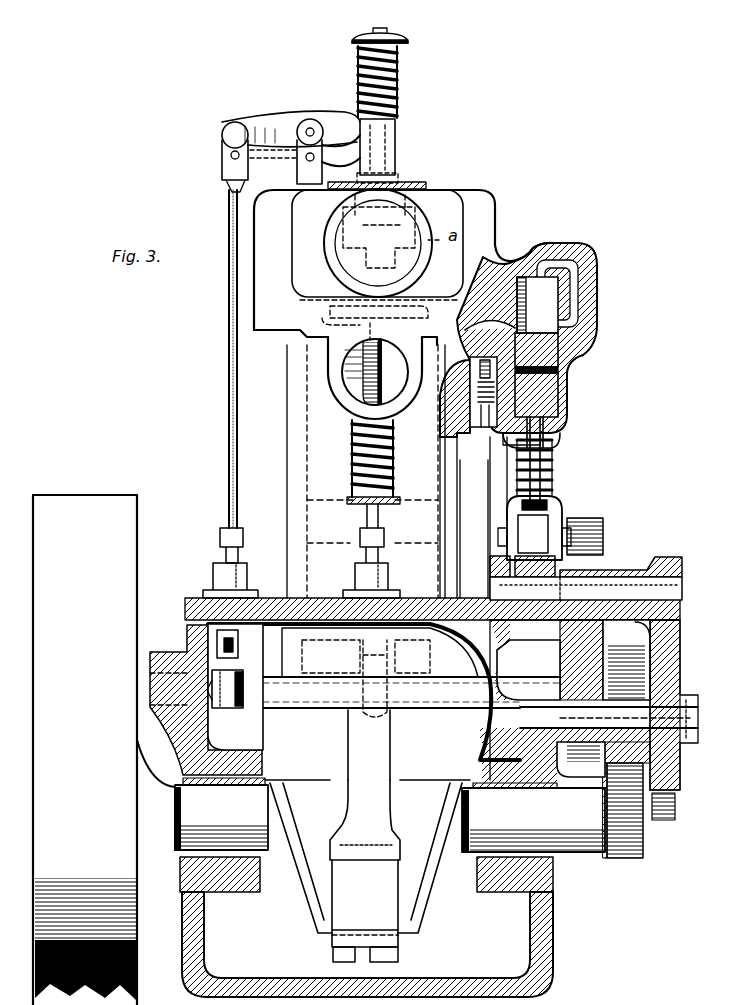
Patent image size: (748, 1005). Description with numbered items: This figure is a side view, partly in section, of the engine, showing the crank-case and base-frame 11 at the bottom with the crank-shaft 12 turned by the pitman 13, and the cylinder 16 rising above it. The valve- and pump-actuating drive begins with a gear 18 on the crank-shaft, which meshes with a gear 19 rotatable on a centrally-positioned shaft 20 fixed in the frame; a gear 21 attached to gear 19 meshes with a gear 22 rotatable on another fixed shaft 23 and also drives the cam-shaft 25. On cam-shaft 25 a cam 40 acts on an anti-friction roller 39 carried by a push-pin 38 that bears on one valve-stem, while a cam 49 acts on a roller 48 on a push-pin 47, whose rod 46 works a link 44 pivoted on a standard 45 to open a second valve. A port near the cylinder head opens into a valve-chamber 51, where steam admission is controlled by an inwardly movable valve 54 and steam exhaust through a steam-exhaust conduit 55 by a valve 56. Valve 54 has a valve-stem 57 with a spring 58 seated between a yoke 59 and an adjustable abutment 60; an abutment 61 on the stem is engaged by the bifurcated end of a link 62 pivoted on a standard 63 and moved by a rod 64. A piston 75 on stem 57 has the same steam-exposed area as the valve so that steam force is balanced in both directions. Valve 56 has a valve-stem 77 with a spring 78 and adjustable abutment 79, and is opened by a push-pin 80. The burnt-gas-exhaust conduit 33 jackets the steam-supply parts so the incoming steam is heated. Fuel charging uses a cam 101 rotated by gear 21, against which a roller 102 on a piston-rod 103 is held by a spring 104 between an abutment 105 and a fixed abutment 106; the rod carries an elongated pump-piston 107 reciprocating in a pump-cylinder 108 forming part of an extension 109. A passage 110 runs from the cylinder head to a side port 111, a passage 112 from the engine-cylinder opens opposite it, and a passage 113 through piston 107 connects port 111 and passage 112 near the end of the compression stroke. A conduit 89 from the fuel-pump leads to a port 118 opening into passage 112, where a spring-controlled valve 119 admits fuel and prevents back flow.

The crank-case and base-frame 11 is at (418, 988).
The crank-shaft 12 is at (390, 818).
The pitman 13 is at (366, 859).
The cylinder 16 is at (432, 482).
The gear 18 is at (643, 843).
The gear 19 is at (625, 648).
The shaft 20 is at (698, 718).
The gear 21 is at (585, 765).
The gear 22 is at (603, 530).
The shaft 23 is at (586, 578).
The cam-shaft 25 is at (315, 710).
The burnt-gas-exhaust conduit 33 is at (421, 250).
The push-pin 38 is at (396, 678).
The anti-friction roller 39 is at (331, 656).
The cam 40 is at (372, 720).
The link 44 is at (328, 116).
The standard 45 is at (307, 118).
The rod 46 is at (222, 135).
The push-pin 47 is at (213, 578).
The anti-friction roller 48 is at (238, 650).
The cam 49 is at (230, 712).
The valve-chamber 51 is at (428, 314).
The valve 54 is at (410, 300).
The steam-exhaust conduit 55 is at (395, 368).
The valve 56 is at (335, 318).
The valve-stem 57 is at (387, 28).
The spring 58 is at (398, 78).
The yoke 59 is at (395, 131).
The adjustable abutment 60 is at (408, 42).
The abutment 61 is at (398, 174).
The link 62 is at (341, 150).
The standard 63 is at (309, 162).
The rod 64 is at (238, 380).
The piston 75 is at (378, 243).
The valve-stem 77 is at (352, 336).
The spring 78 is at (394, 470).
The adjustable abutment 79 is at (388, 506).
The push-pin 80 is at (390, 580).
The conduit 89 is at (480, 500).
The cam 101 is at (528, 661).
The anti-friction roller 102 is at (548, 518).
The piston-rod 103 is at (560, 432).
The spring 104 is at (552, 472).
The abutment 105 is at (547, 505).
The fixed abutment 106 is at (518, 461).
The pump-piston 107 is at (558, 395).
The pump-cylinder 108 is at (570, 368).
The extension 109 is at (512, 262).
The passage 110 is at (578, 277).
The port 111 is at (597, 338).
The passage 112 is at (490, 326).
The passage 113 is at (558, 371).
The port 118 is at (539, 305).
The spring-controlled valve 119 is at (470, 389).